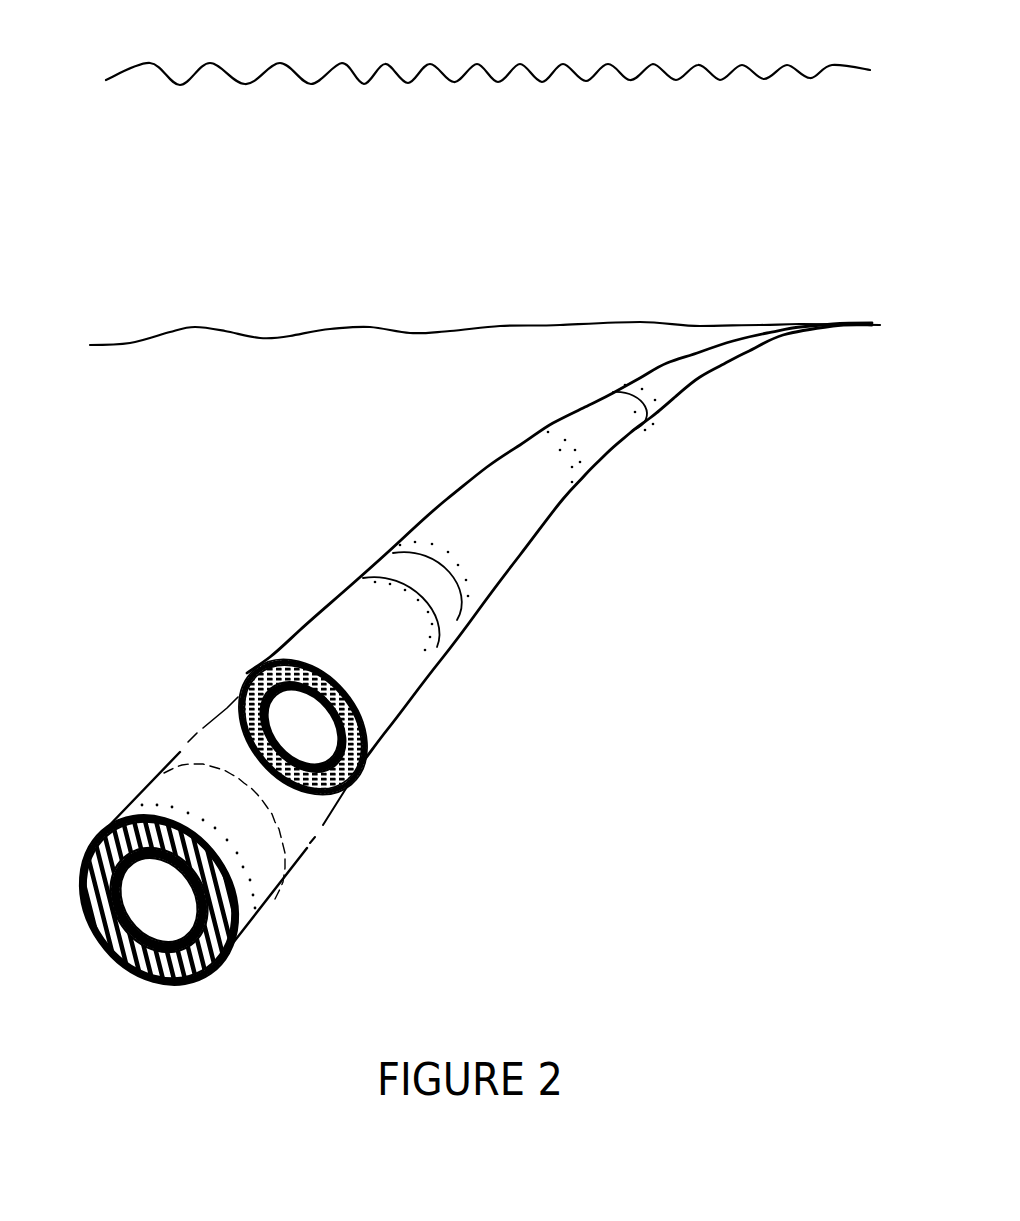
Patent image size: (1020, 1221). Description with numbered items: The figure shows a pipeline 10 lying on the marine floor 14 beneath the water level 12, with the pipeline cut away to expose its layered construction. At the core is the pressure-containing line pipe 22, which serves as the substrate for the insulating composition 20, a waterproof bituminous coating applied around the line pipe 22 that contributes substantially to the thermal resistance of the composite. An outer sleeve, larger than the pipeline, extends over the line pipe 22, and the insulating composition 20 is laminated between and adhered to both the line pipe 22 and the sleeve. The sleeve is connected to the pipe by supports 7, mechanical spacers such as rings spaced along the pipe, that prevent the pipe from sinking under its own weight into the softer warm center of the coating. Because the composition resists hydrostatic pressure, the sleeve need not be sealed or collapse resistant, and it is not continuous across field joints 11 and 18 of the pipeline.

The water level 12 is at (607, 87).
The marine floor 14 is at (330, 352).
The pipeline 10 is at (745, 355).
The supports 7 is at (545, 440).
The pipe section joint 11 is at (640, 413).
The outer pipe wall 18 is at (240, 693).
The line pipe 22 is at (362, 758).
The insulating composition 20 is at (337, 795).